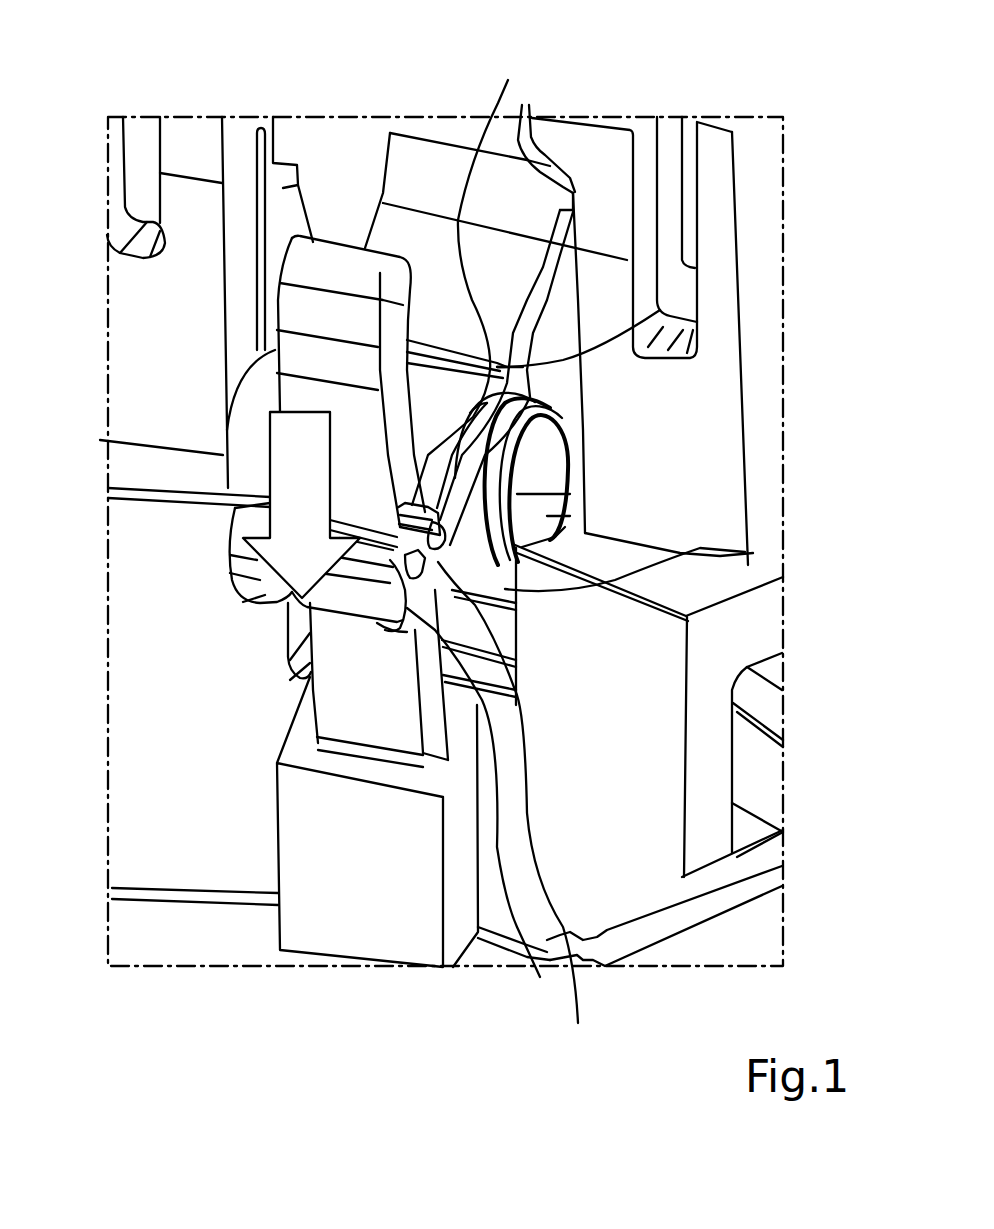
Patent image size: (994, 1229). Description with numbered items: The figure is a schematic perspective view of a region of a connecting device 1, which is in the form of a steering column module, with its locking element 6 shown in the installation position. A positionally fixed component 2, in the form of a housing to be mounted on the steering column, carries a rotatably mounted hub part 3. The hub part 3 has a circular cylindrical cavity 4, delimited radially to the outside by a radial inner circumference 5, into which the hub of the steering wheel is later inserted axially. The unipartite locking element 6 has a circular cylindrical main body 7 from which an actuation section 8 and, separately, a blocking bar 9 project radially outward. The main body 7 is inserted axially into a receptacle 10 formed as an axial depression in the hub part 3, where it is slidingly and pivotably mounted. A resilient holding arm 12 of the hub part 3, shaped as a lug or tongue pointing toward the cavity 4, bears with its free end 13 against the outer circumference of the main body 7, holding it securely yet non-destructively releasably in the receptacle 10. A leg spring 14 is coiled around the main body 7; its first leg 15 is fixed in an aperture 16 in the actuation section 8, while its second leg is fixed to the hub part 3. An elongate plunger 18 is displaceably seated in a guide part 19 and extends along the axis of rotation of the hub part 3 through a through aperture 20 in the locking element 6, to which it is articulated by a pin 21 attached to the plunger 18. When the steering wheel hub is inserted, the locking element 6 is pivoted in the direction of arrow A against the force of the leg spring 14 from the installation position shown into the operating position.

The connecting device 1 is at (613, 97).
The positionally fixed component 2 is at (505, 683).
The hub part 3 is at (663, 797).
The circular cylindrical cavity 4 is at (189, 948).
The radial inner circumference 5 is at (188, 638).
The locking element 6 is at (556, 460).
The circular cylindrical main body 7 is at (570, 516).
The actuation section 8 is at (228, 580).
The blocking bar 9 is at (778, 553).
The receptacle 10 is at (575, 541).
The resilient holding arm 12 is at (427, 203).
The free end 13 is at (660, 310).
The leg spring 14 is at (570, 494).
The first leg 15 is at (580, 953).
The aperture 16 is at (505, 785).
The plunger 18 is at (320, 312).
The guide part 19 is at (332, 927).
The through aperture 20 is at (342, 503).
The pin 21 is at (470, 278).
The arrow A is at (283, 462).